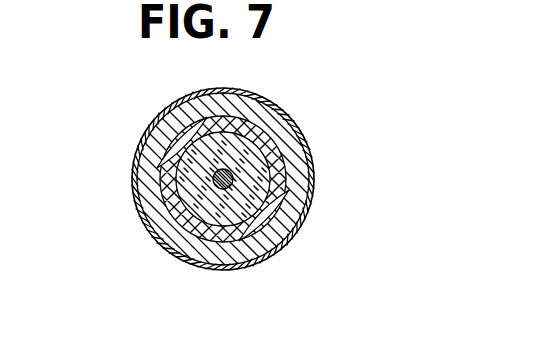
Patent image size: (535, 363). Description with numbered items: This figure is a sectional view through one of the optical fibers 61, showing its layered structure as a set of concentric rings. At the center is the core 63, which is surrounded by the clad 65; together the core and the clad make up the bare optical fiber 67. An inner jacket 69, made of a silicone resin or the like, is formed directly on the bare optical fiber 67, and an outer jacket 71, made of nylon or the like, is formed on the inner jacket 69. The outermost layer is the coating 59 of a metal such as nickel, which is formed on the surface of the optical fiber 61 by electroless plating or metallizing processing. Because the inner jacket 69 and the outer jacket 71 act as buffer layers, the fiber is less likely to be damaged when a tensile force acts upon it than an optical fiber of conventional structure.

The optical fiber 61 is at (138, 148).
The coating 59 is at (275, 115).
The outer jacket 71 is at (275, 230).
The inner jacket 69 is at (210, 233).
The bare optical fiber 67 is at (178, 209).
The clad 65 is at (253, 160).
The core 63 is at (228, 183).